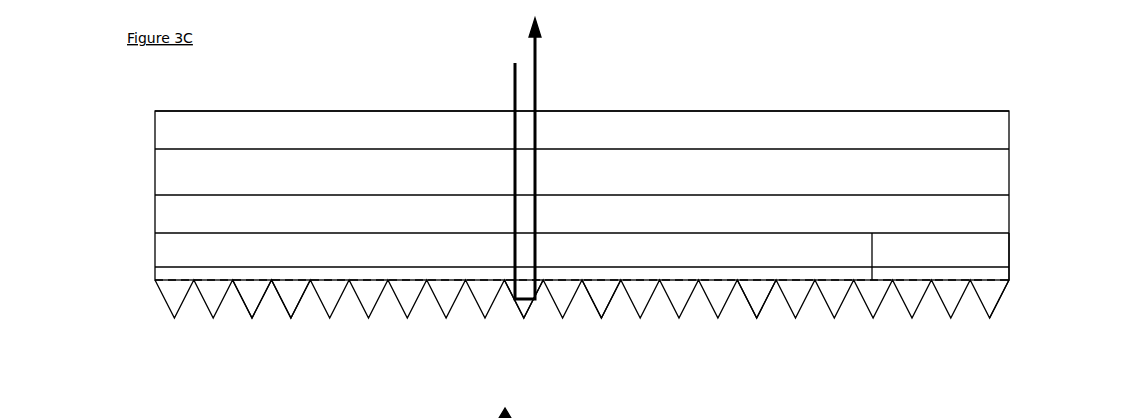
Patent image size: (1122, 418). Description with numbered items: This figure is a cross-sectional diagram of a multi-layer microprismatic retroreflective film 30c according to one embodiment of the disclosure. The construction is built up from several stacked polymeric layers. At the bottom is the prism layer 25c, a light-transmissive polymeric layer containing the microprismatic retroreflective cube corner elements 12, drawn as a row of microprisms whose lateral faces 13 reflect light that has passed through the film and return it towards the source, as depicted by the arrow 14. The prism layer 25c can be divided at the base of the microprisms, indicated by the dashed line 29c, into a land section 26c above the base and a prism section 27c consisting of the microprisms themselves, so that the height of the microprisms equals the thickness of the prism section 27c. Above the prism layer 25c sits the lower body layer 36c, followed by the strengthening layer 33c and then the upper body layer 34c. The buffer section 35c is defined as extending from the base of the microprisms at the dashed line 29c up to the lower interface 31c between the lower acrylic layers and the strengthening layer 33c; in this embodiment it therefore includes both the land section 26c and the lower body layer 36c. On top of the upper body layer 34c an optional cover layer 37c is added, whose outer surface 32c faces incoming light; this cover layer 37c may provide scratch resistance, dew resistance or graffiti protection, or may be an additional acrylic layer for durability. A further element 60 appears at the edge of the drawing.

The multi-layer retroreflective film 30c is at (128, 223).
The top surface 32c is at (328, 110).
The cover layer 37c is at (1000, 123).
The upper body layer 34c is at (1000, 172).
The strengthening layer 33c is at (993, 207).
The lower body layer 36c is at (992, 243).
The land section 26c is at (148, 267).
The microstructured layer 27c is at (148, 281).
The buffer section 35c is at (1022, 233).
The prism layer 25c is at (1048, 270).
The arrow 14 is at (540, 56).
The microprismatic retroreflective cube corner elements 12 is at (252, 306).
The lateral faces 13 is at (547, 358).
The prism structure 29c is at (754, 281).
The interface line 31c is at (872, 233).
The light source 60 is at (752, 411).